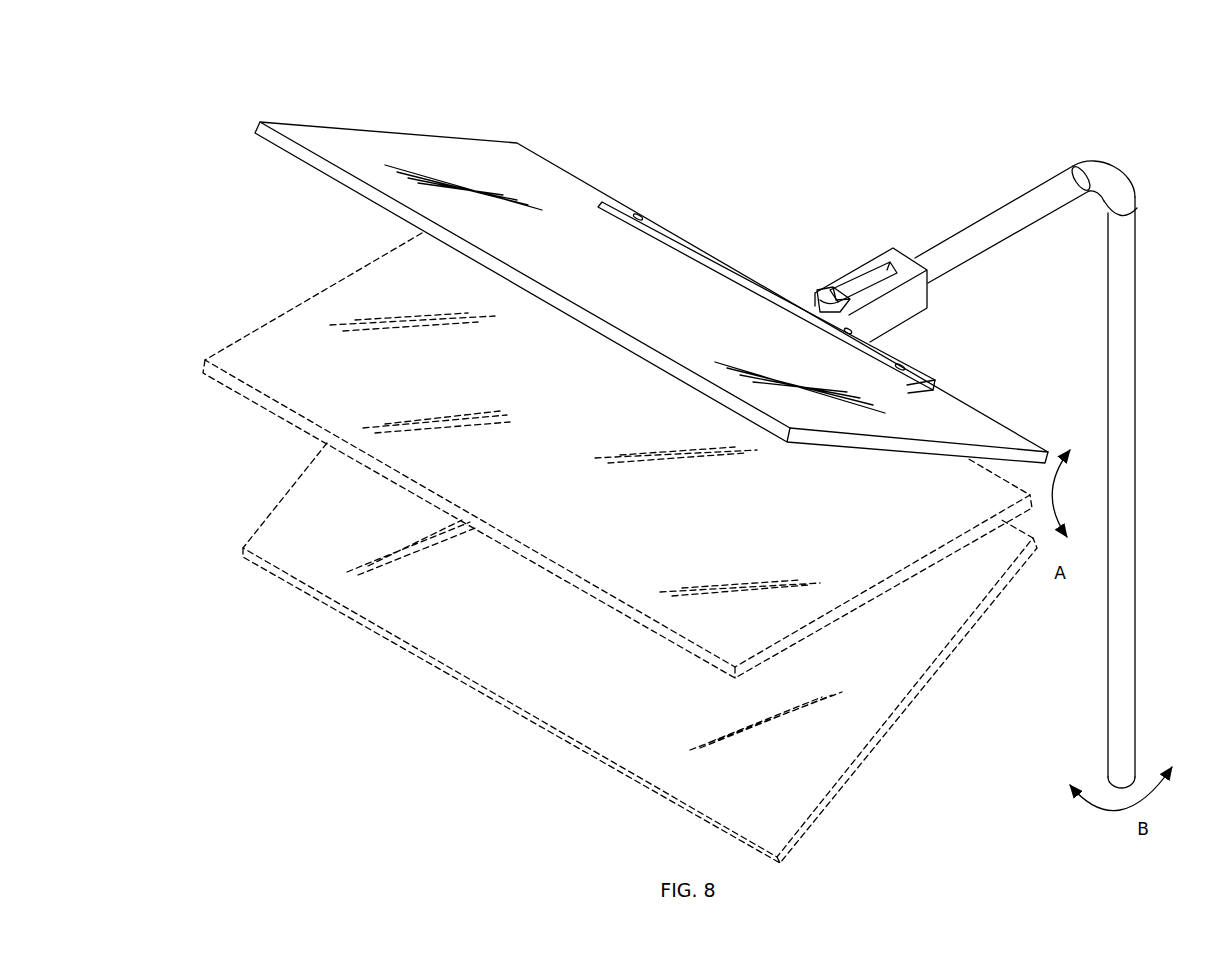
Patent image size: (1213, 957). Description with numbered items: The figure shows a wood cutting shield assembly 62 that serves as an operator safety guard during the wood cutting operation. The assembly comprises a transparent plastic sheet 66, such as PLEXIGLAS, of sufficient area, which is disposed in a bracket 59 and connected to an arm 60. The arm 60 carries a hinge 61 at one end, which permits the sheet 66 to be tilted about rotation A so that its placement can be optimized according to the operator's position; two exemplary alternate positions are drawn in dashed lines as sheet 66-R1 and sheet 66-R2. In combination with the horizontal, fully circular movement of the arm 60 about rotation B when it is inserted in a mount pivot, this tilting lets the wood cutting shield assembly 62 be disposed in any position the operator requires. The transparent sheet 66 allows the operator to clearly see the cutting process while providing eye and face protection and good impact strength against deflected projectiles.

The wood cutting shield assembly 62 is at (913, 97).
The arm 60 is at (1042, 190).
The hinge 61 is at (823, 295).
The bracket 59 is at (715, 265).
The transparent plastic sheet 66 is at (553, 183).
The sheet in first alternate position 66-R1 is at (280, 327).
The sheet in second alternate position 66-R2 is at (278, 535).